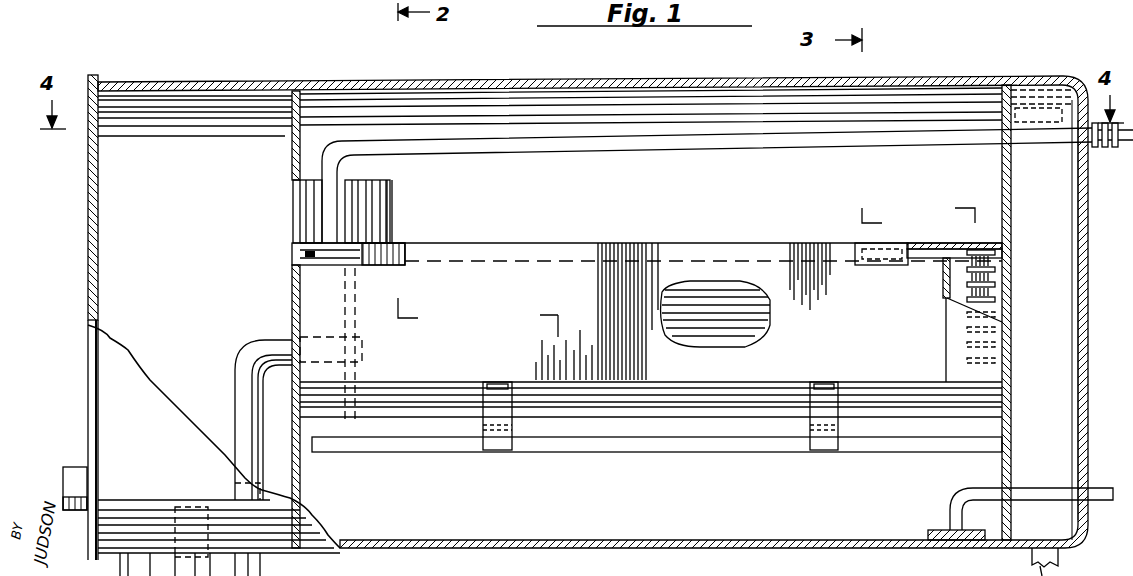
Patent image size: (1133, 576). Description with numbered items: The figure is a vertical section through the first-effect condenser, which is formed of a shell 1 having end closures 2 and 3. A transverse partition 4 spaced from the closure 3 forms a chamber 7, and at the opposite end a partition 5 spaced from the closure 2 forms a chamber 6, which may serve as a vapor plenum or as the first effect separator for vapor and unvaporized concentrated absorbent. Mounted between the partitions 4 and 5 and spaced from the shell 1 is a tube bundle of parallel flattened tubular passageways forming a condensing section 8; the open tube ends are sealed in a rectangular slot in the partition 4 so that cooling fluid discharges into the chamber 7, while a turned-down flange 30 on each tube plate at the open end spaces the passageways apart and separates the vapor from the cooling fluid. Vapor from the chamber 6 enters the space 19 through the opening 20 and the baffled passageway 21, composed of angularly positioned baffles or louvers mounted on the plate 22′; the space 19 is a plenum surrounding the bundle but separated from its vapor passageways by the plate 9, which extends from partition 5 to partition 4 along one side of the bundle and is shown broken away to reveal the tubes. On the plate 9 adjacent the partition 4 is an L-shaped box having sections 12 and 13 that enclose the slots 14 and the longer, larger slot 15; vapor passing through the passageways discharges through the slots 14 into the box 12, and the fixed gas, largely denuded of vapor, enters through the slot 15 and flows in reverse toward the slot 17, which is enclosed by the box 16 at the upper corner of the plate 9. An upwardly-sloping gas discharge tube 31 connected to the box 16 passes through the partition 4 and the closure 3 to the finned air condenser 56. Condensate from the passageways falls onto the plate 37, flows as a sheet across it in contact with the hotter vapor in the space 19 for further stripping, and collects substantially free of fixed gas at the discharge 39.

The shell 1 is at (531, 82).
The end closure 2 is at (88, 200).
The end closure 3 is at (1078, 375).
The transverse partition 4 is at (1011, 256).
The partition 5 is at (292, 290).
The chamber 6 is at (194, 315).
The chamber 7 is at (1046, 357).
The condensing section 8 is at (690, 290).
The plate 9 is at (812, 327).
The box section 12 is at (944, 330).
The box section 13 is at (933, 264).
The slot 14 is at (990, 299).
The slot 15 is at (920, 245).
The box 16 is at (335, 266).
The slot 17 is at (305, 257).
The space 19 is at (584, 210).
The opening 20 is at (293, 222).
The baffled passageway 21 is at (386, 200).
The plate 22′ is at (392, 240).
The turned-down flange 30 is at (512, 425).
The gas discharge tube 31 is at (436, 150).
The plate 37 is at (620, 452).
The discharge 39 is at (978, 490).
The finned air condenser 56 is at (1097, 147).